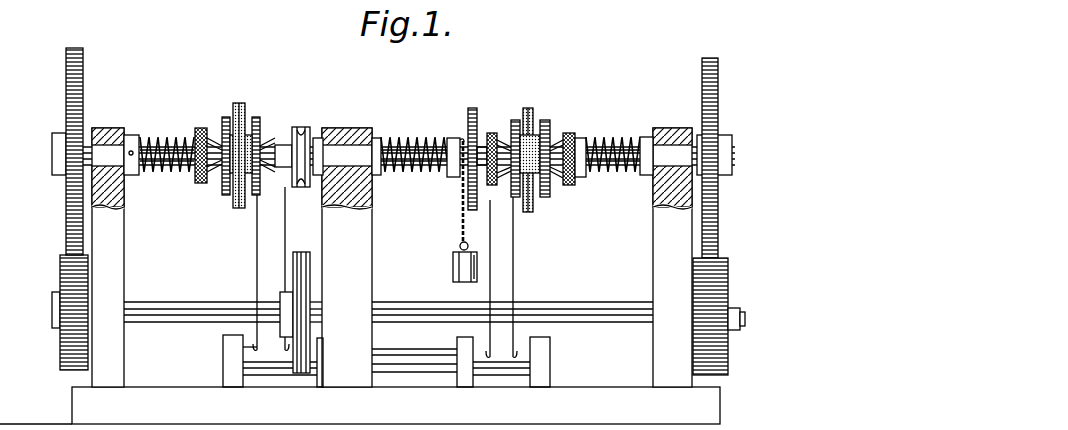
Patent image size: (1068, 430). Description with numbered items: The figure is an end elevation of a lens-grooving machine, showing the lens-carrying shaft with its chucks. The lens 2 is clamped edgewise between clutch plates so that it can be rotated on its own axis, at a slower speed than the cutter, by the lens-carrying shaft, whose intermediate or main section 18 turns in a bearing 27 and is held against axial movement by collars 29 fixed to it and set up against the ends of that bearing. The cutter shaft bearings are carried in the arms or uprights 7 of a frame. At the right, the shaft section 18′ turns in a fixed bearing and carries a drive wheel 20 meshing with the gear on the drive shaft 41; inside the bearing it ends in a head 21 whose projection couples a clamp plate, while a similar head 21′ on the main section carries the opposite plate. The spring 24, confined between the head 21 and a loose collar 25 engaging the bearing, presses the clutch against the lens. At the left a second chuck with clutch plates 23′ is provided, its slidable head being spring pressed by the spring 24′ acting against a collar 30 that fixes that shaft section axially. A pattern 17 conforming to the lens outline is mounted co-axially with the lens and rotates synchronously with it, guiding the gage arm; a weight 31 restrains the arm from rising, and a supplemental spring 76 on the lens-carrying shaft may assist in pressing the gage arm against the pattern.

The lens 2 is at (245, 110).
The arms or uprights 7 is at (257, 258).
The pattern 17 is at (478, 200).
The lens-carrying shaft (intermediate or main section) 18 is at (414, 184).
The shaft section 18′ is at (620, 150).
The drive wheel 20 is at (720, 108).
The head 21 is at (553, 145).
The head 21′ is at (502, 147).
The clutch plates 23′ is at (225, 117).
The spring 24 is at (612, 175).
The spring 24′ is at (168, 142).
The loose collar 25 is at (650, 139).
The bearing 27 is at (350, 128).
The collars 29 is at (306, 127).
The collars 30 is at (90, 140).
The weight 31 is at (452, 272).
The drive shaft 41 is at (582, 310).
The spring 76 is at (405, 193).